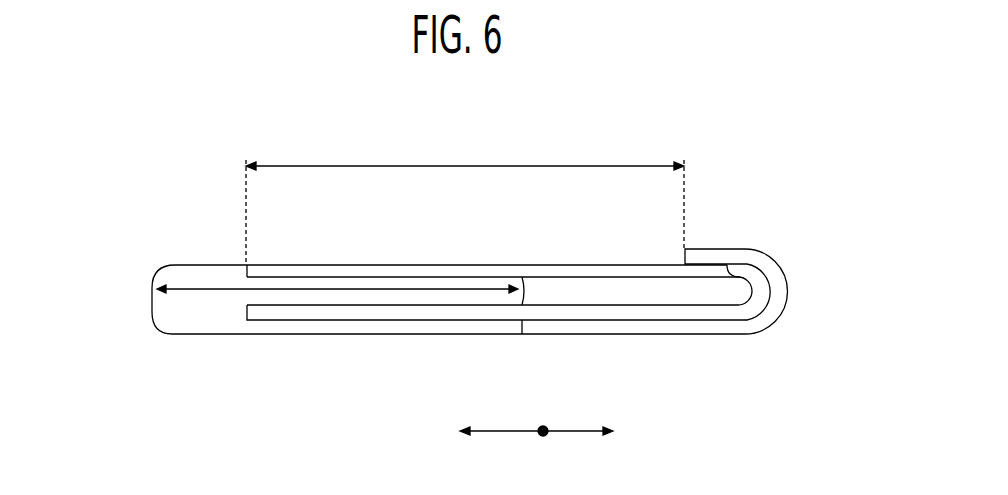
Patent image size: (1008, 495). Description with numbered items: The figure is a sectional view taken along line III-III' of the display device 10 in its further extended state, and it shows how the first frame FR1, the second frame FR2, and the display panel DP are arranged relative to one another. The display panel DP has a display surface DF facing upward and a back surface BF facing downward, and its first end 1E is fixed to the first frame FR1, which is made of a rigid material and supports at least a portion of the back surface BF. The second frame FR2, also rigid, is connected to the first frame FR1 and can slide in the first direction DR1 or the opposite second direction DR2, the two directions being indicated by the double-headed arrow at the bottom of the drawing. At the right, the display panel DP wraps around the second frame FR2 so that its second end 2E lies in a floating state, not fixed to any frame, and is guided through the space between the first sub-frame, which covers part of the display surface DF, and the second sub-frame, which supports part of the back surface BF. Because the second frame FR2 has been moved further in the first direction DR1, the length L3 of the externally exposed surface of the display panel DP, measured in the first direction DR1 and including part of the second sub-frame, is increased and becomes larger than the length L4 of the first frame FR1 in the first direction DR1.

The display device 10 is at (620, 128).
The first end 1E is at (232, 272).
The second end 2E is at (738, 250).
The display panel DP is at (346, 208).
The display surface DF is at (372, 267).
The back surface BF is at (433, 267).
The length of the externally exposed surface L3 is at (465, 201).
The length of the first frame L4 is at (340, 290).
The first frame FR1 is at (192, 335).
The second frame FR2 is at (635, 392).
The section line III is at (143, 348).
The section line III' is at (791, 346).
The first direction DR1 is at (594, 432).
The second direction DR2 is at (483, 432).